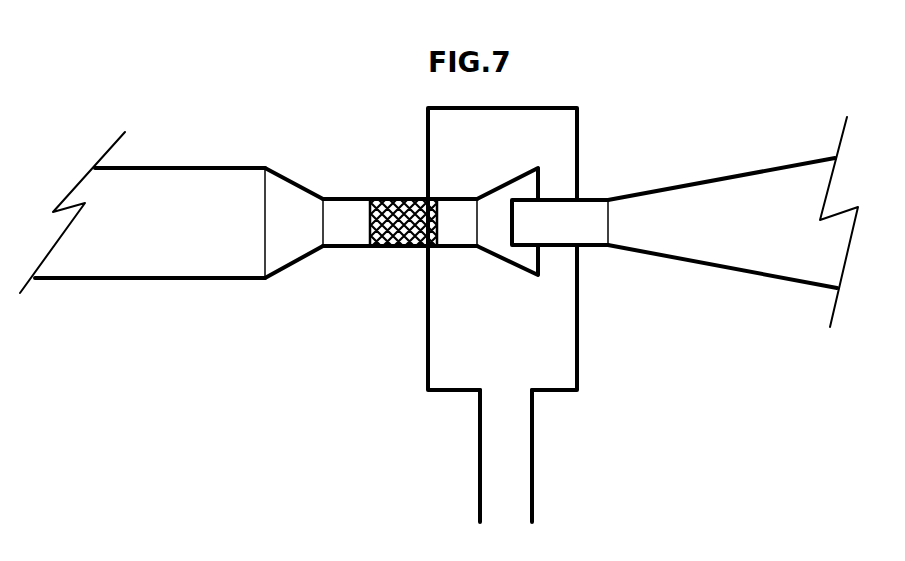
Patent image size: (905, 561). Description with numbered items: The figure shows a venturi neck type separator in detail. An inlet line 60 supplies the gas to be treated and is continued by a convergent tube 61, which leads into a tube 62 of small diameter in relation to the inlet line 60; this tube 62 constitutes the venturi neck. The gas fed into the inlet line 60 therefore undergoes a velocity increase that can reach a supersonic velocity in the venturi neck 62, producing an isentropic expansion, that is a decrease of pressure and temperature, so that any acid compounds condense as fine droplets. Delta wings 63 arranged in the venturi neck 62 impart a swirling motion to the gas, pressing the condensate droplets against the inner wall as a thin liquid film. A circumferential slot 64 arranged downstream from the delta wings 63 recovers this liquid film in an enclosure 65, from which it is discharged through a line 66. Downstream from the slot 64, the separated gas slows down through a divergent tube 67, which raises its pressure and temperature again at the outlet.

The inlet line 60 is at (186, 168).
The convergent tube 61 is at (289, 181).
The venturi neck tube 62 is at (352, 199).
The delta wings 63 is at (405, 247).
The circumferential slot 64 is at (548, 183).
The enclosure 65 is at (548, 342).
The discharge line 66 is at (520, 474).
The divergent tube 67 is at (763, 171).